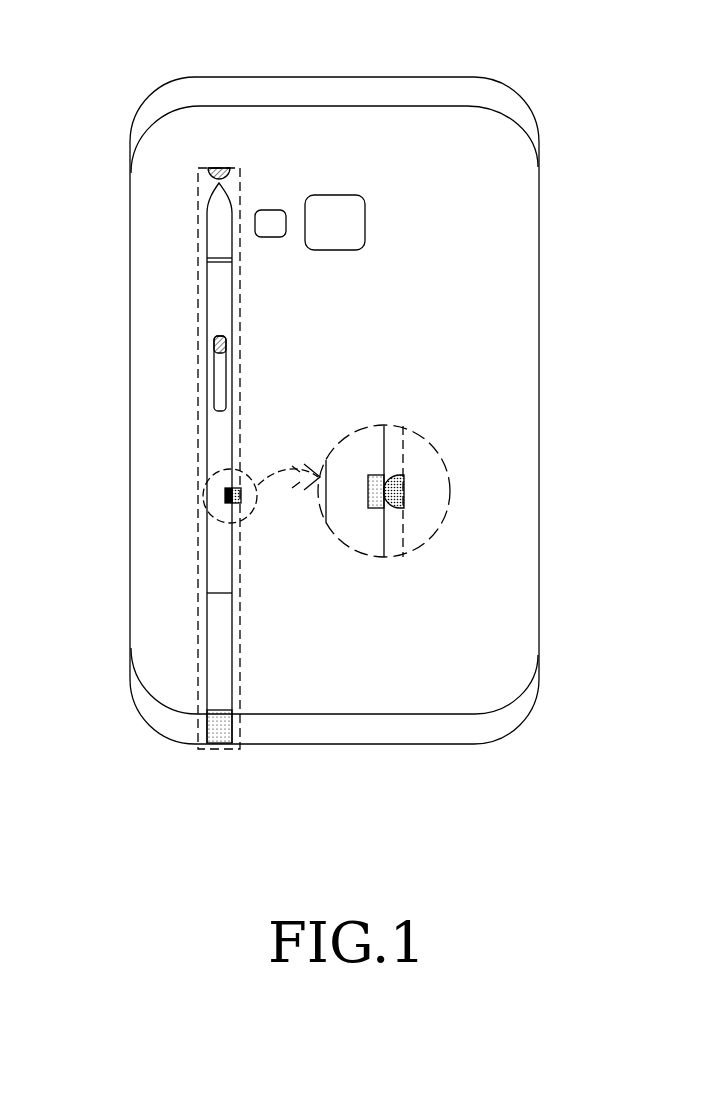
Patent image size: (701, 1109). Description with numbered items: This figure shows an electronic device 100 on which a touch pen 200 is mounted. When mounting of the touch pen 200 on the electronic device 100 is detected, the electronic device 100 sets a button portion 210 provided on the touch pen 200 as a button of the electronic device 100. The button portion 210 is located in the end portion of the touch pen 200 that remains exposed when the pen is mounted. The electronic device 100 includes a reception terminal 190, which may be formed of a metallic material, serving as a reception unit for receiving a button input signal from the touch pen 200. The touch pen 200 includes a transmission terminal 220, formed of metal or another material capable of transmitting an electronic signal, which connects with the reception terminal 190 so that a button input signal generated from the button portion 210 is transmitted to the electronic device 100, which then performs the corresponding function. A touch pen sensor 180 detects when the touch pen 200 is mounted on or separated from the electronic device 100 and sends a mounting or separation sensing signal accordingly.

The electronic device 100 is at (521, 81).
The touch pen sensor 180 is at (220, 170).
The reception terminal 190 is at (397, 492).
The touch pen 200 is at (197, 608).
The button portion 210 is at (218, 740).
The transmission terminal 220 is at (370, 506).